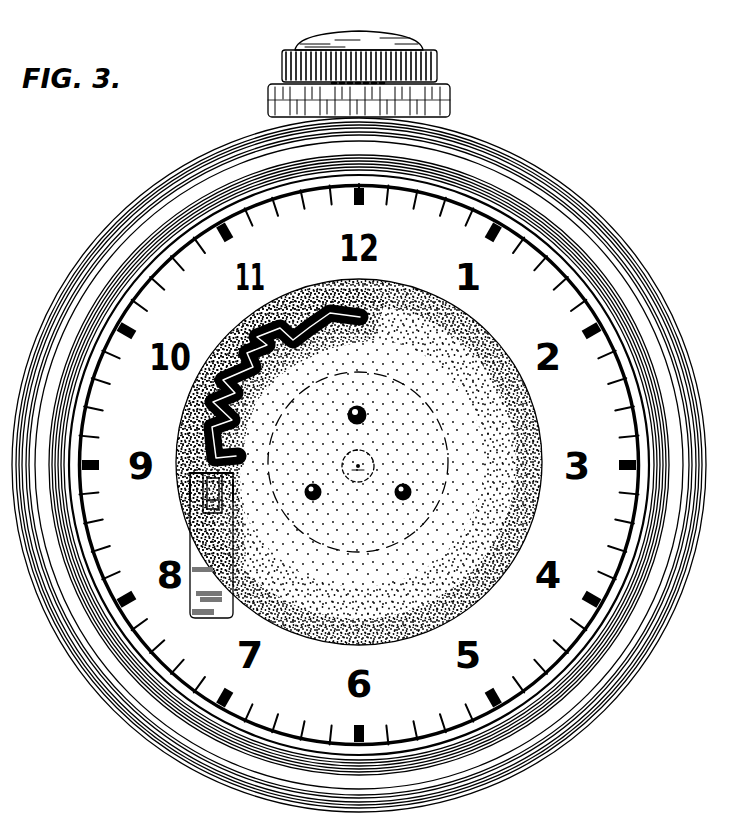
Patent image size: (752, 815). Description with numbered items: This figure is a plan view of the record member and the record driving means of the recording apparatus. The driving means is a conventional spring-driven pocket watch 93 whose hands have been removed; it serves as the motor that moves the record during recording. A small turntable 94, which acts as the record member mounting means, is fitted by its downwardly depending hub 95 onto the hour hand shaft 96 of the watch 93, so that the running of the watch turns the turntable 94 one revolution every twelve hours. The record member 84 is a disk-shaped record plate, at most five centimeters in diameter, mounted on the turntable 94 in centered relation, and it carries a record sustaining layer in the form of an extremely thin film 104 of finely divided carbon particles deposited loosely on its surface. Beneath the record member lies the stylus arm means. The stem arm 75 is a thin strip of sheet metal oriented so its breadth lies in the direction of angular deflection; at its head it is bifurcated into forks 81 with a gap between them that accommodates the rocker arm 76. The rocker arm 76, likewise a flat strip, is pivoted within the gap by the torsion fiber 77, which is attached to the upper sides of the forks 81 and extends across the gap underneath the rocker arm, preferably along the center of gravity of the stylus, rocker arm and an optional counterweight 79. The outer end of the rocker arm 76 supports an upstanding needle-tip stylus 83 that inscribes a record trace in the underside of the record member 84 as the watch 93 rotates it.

The stem arm 75 is at (192, 592).
The rocker arm 76 is at (215, 470).
The torsion fiber 77 is at (203, 495).
The counterweight 79 is at (222, 508).
The forks 81 is at (233, 482).
The stylus 83 is at (215, 470).
The record member 84 is at (379, 640).
The pocket watch 93 is at (66, 650).
The turntable 94 is at (452, 478).
The hub 95 is at (358, 482).
The hour hand shaft 96 is at (373, 454).
The film 104 is at (188, 414).